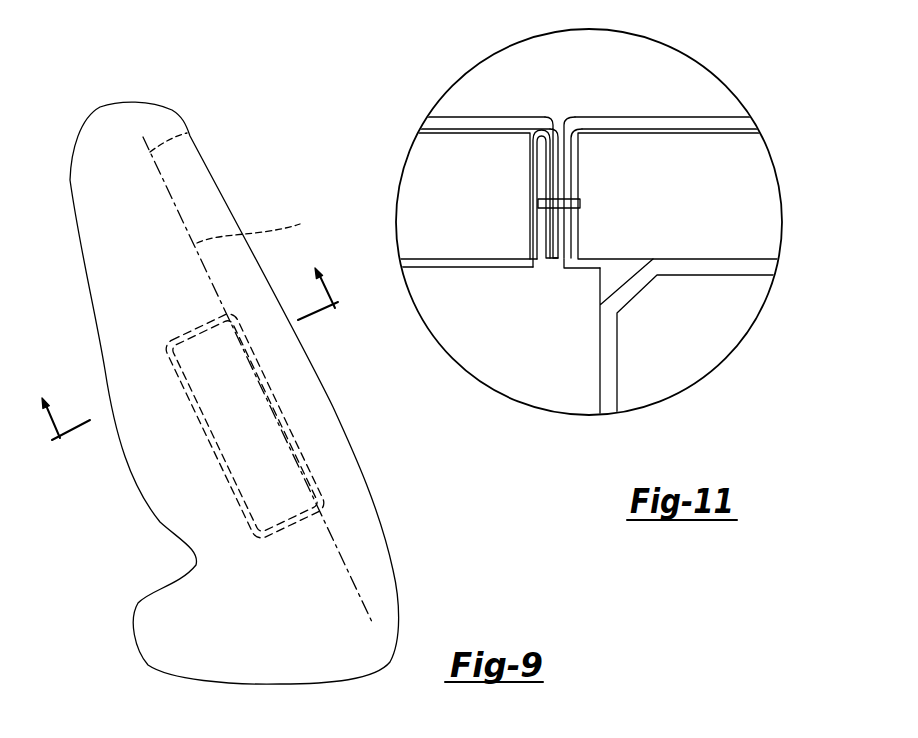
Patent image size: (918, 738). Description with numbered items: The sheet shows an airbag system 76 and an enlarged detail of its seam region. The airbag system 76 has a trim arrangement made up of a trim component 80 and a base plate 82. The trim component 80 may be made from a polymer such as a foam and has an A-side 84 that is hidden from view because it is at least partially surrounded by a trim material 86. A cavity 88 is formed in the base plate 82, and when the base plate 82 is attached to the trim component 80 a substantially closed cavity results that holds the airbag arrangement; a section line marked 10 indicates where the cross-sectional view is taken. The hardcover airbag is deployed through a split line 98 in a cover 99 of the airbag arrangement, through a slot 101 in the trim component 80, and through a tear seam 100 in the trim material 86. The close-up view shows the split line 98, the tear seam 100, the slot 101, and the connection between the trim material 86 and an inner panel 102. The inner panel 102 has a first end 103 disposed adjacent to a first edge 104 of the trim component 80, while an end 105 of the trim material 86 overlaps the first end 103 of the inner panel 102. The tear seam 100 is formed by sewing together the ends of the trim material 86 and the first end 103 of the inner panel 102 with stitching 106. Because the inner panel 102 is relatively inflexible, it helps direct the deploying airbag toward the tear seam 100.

In FIG. 9, the section line for FIG. 10 is at (198, 374).
In FIG. 9, the airbag system 76 is at (262, 149).
In FIG. 9, the trim component 80 is at (235, 216).
In FIG. 11, the trim component 80 is at (752, 185).
In FIG. 11, the base plate 82 is at (715, 282).
In FIG. 9, the A-side 84 is at (97, 177).
In FIG. 9, the trim material 86 is at (93, 235).
In FIG. 11, the trim material 86 is at (680, 117).
In FIG. 9, the cavity 88 is at (316, 466).
In FIG. 9, the split line 98 is at (293, 518).
In FIG. 11, the split line 98 is at (564, 268).
In FIG. 11, the cover 99 is at (598, 377).
In FIG. 9, the tear seam 100 is at (197, 125).
In FIG. 11, the tear seam 100 is at (553, 127).
In FIG. 9, the slot 101 is at (263, 227).
In FIG. 11, the slot 101 is at (582, 140).
In FIG. 11, the inner panel 102 is at (543, 260).
In FIG. 11, the first end 103 is at (545, 185).
In FIG. 11, the first edge 104 is at (536, 131).
In FIG. 11, the end 105 is at (540, 233).
In FIG. 11, the stitching 106 is at (580, 197).